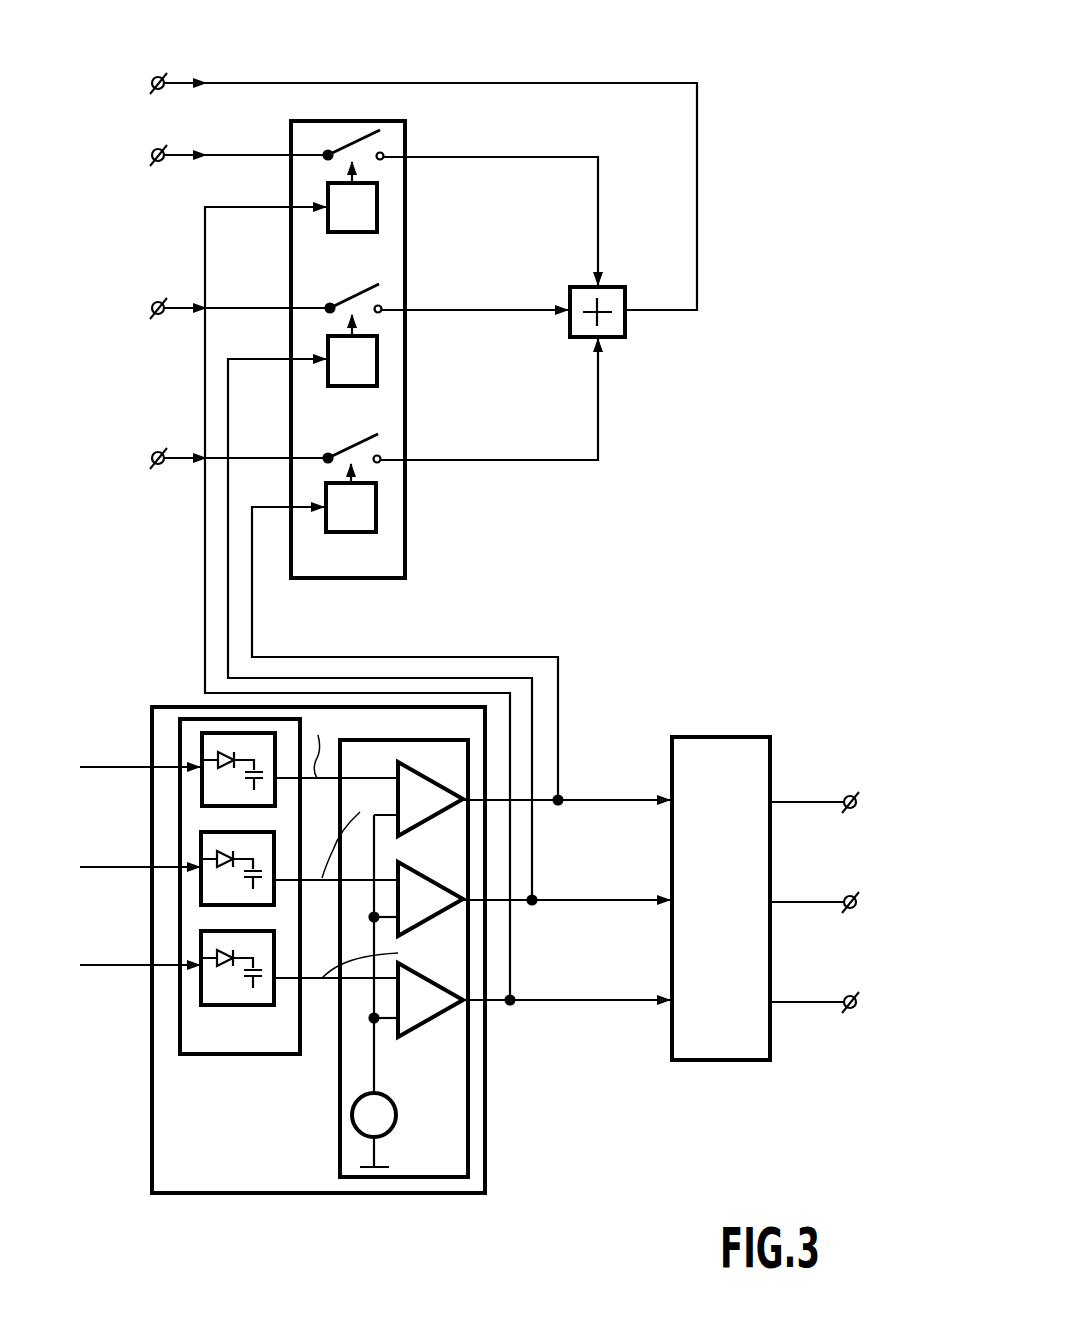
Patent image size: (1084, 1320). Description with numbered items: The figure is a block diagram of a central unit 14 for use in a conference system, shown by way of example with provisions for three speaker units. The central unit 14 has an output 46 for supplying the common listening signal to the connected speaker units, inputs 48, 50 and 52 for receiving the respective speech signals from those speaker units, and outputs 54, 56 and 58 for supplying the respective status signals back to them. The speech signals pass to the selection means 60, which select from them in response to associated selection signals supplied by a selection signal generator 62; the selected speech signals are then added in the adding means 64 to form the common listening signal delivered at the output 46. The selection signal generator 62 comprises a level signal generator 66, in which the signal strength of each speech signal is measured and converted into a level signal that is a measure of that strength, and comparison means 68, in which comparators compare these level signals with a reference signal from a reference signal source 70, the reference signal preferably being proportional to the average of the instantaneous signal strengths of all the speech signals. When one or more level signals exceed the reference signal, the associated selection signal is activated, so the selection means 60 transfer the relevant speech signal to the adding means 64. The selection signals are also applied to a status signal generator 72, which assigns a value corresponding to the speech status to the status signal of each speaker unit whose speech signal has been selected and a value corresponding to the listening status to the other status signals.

The central unit 14 is at (628, 593).
The output 46 is at (152, 77).
The input 48 is at (152, 160).
The input 50 is at (152, 304).
The input 52 is at (152, 454).
The output 54 is at (856, 808).
The output 56 is at (856, 908).
The output 58 is at (856, 1008).
The selection means 60 is at (405, 515).
The selection signal generator 62 is at (485, 1062).
The adding means 64 is at (625, 322).
The level signal generator 66 is at (218, 1054).
The comparison means 68 is at (378, 958).
The reference signal source 70 is at (397, 1110).
The status signal generator 72 is at (735, 737).